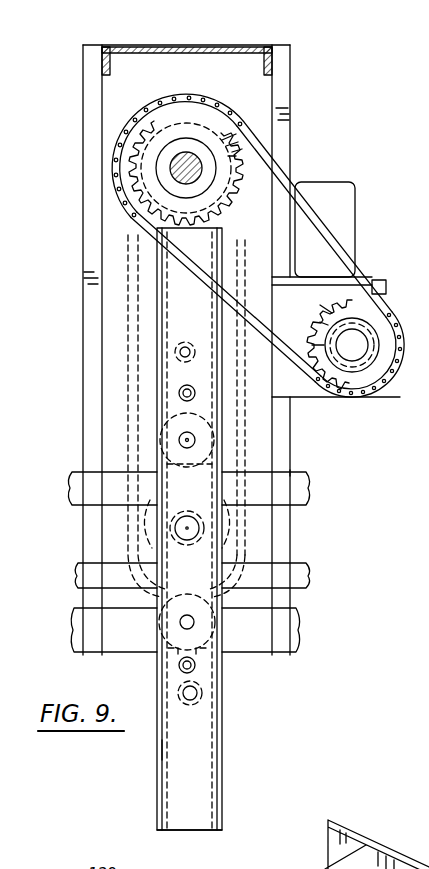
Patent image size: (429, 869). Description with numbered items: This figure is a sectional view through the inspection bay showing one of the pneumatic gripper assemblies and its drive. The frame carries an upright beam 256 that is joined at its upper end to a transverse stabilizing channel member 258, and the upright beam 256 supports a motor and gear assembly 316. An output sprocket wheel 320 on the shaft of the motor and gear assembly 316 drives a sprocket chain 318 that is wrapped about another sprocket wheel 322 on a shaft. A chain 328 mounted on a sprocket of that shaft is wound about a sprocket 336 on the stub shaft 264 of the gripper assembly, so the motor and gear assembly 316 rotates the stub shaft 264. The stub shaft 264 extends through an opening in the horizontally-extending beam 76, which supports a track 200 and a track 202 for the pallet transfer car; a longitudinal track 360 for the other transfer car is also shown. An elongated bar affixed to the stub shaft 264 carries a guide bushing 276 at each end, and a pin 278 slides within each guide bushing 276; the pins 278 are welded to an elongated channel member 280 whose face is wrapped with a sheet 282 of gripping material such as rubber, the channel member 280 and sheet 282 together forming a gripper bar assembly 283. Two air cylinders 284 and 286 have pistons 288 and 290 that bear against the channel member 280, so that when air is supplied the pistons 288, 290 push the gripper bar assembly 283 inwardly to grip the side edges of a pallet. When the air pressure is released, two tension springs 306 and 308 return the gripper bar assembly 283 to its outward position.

The transverse stabilizing channel member 258 is at (189, 27).
The upright beam 256 is at (87, 149).
The sprocket wheel 322 is at (257, 153).
The sprocket chain 318 is at (318, 230).
The motor and gear assembly 316 is at (383, 293).
The output sprocket wheel 320 is at (350, 395).
The chain 328 is at (126, 274).
The guide bushing 276 is at (186, 341).
The pin 278 is at (178, 351).
The tension spring 306 is at (179, 392).
The piston 288 is at (195, 440).
The air cylinder 284 is at (216, 464).
The beam 76 is at (311, 478).
The track 200 is at (359, 465).
The stub shaft 264 is at (176, 530).
The sprocket 336 is at (246, 537).
The track 202 is at (311, 572).
The longitudinal track 360 is at (301, 616).
The piston 290 is at (184, 624).
The tension spring 308 is at (179, 667).
The air cylinder 286 is at (196, 655).
The sheet of gripping material 282 is at (223, 779).
The gripper bar assembly 283 is at (156, 745).
The elongated channel member 280 is at (211, 828).